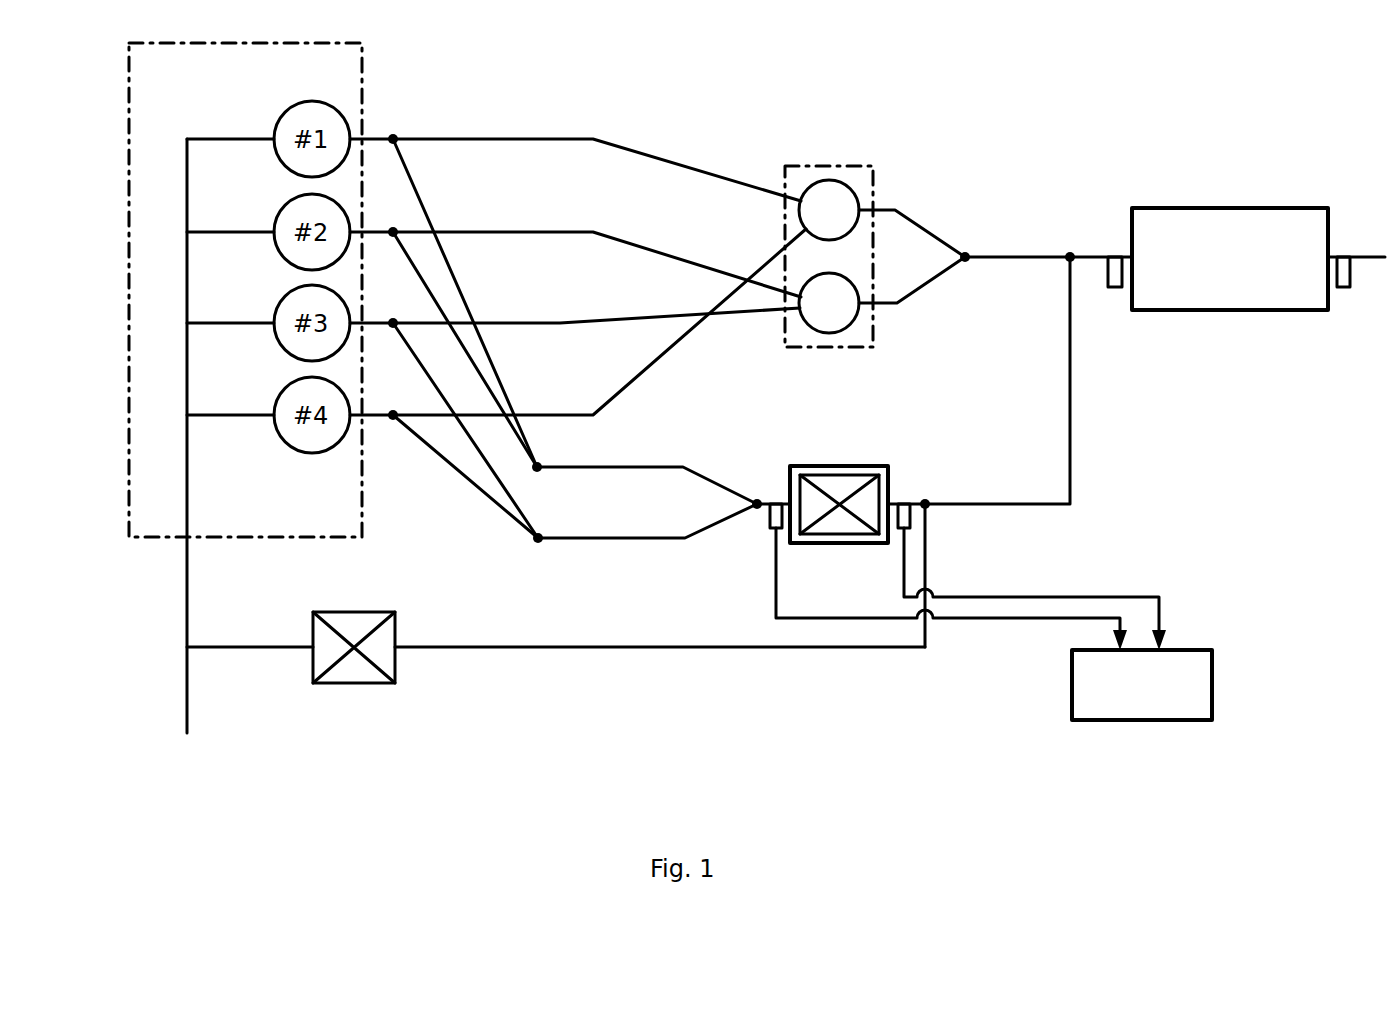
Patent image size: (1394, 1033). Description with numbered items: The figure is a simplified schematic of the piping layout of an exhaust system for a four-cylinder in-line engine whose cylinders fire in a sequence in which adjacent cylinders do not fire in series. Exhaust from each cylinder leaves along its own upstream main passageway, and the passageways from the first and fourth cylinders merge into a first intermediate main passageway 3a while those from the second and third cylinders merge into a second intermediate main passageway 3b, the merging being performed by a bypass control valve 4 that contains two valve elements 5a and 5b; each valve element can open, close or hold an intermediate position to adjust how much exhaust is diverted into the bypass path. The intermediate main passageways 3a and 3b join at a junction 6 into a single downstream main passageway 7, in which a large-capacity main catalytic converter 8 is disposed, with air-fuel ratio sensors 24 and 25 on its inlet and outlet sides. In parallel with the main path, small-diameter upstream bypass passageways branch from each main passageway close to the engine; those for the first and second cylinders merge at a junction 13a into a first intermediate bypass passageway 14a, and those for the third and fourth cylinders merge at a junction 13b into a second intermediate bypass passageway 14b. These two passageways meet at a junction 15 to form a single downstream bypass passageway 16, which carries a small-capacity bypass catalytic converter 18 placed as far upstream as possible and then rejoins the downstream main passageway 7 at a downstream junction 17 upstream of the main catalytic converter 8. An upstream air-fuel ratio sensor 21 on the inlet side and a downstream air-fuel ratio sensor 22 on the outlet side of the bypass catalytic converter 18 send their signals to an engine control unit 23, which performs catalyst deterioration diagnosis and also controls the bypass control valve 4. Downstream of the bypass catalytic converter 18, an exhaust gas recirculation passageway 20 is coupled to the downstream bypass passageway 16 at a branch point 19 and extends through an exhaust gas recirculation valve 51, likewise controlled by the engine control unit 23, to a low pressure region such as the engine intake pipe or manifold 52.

The junction 13a is at (545, 465).
The junction 13b is at (538, 545).
The first intermediate bypass passageway 14a is at (650, 467).
The second intermediate bypass passageway 14b is at (618, 540).
The junction 15 is at (758, 500).
The bypass catalytic converter 18 is at (855, 466).
The branch point 19 is at (925, 500).
The downstream bypass passageway 16 is at (1015, 507).
The downstream junction 17 is at (1065, 262).
The bypass control valve 4 is at (800, 165).
The valve element 5a is at (842, 180).
The valve element 5b is at (828, 345).
The first intermediate main passageway 3a is at (918, 218).
The second intermediate main passageway 3b is at (937, 280).
The junction 6 is at (970, 252).
The downstream main passageway 7 is at (1098, 255).
The main catalytic converter 8 is at (1238, 208).
The air-fuel ratio sensor 24 is at (1113, 288).
The air-fuel ratio sensor 25 is at (1343, 288).
The upstream air-fuel ratio sensor 21 is at (770, 525).
The downstream air-fuel ratio sensor 22 is at (900, 532).
The engine control unit 23 is at (1215, 685).
The exhaust gas recirculation passageway 20 is at (250, 650).
The exhaust gas recirculation valve 51 is at (398, 668).
The engine intake pipe or manifold 52 is at (187, 673).